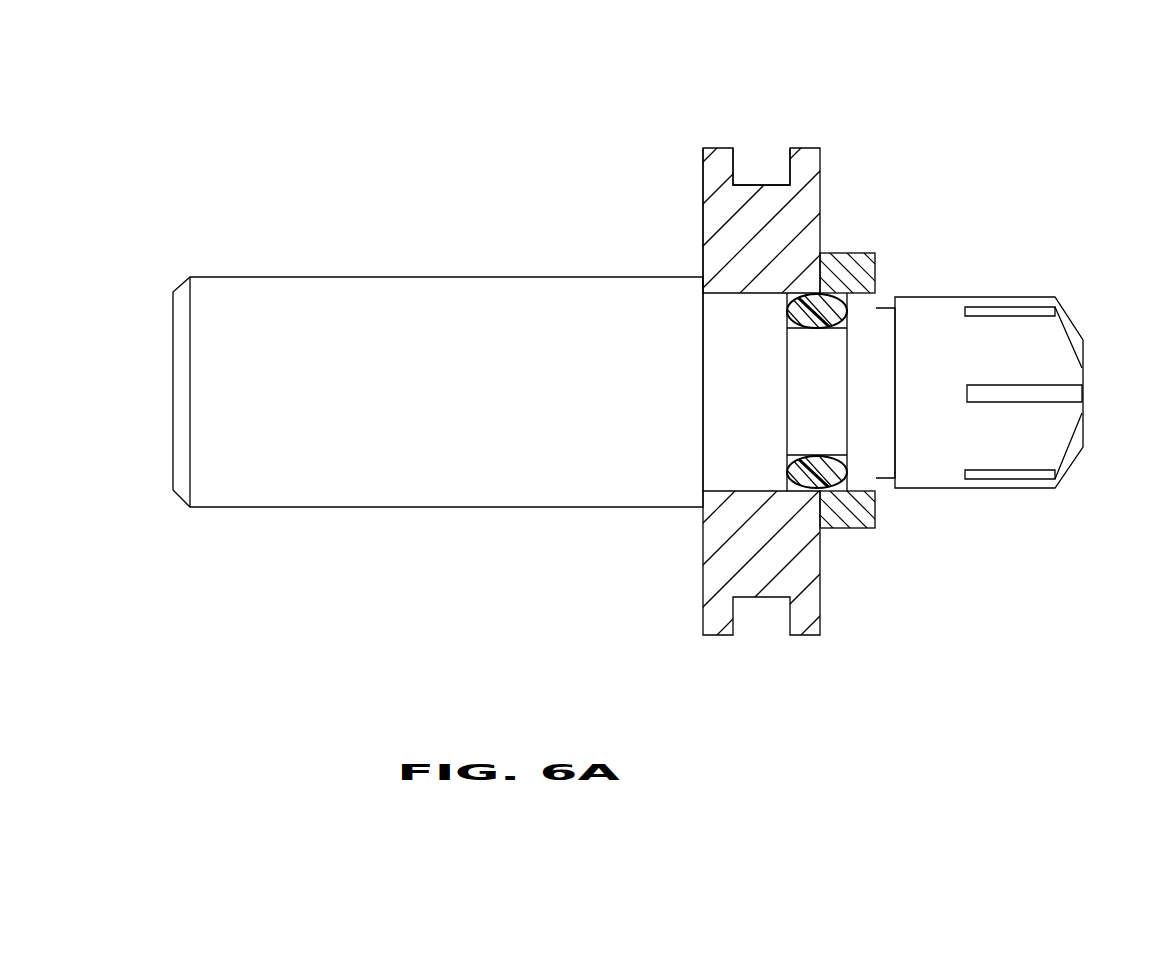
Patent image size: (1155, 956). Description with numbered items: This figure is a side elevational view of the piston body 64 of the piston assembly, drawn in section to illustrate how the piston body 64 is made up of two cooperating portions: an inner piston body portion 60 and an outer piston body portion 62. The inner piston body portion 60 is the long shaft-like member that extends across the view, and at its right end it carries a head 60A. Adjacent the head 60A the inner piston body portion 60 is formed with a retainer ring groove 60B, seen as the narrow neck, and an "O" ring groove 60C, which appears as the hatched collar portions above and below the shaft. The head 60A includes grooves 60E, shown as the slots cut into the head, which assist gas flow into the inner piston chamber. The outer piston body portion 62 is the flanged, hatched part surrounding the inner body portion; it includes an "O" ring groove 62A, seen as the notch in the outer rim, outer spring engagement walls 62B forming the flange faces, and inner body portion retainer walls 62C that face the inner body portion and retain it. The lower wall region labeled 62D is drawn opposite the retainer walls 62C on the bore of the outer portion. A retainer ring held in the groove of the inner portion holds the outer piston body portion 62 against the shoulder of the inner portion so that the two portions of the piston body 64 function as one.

The inner piston body portion 60 is at (405, 277).
The head 60A is at (1070, 500).
The retainer ring groove 60B is at (885, 300).
The "O" ring groove 60C is at (868, 530).
The grooves 60E is at (1020, 310).
The outer piston body portion 62 is at (825, 647).
The "O" ring groove 62A is at (758, 167).
The outer spring engagement walls 62B is at (702, 230).
The inner body portion retainer walls 62C is at (755, 295).
The bore lower wall 62D is at (733, 491).
The piston body 64 is at (693, 133).